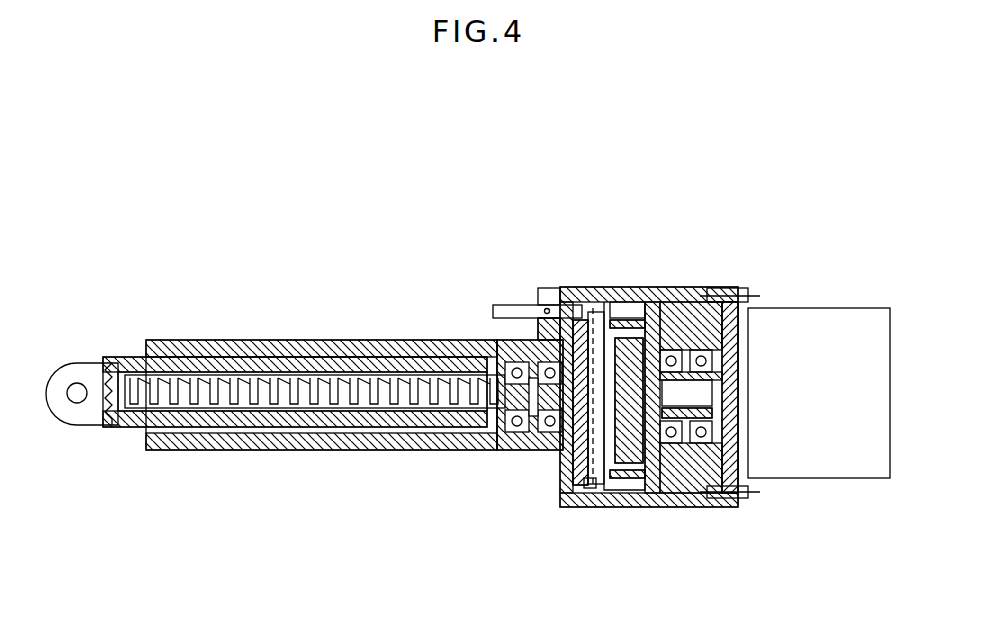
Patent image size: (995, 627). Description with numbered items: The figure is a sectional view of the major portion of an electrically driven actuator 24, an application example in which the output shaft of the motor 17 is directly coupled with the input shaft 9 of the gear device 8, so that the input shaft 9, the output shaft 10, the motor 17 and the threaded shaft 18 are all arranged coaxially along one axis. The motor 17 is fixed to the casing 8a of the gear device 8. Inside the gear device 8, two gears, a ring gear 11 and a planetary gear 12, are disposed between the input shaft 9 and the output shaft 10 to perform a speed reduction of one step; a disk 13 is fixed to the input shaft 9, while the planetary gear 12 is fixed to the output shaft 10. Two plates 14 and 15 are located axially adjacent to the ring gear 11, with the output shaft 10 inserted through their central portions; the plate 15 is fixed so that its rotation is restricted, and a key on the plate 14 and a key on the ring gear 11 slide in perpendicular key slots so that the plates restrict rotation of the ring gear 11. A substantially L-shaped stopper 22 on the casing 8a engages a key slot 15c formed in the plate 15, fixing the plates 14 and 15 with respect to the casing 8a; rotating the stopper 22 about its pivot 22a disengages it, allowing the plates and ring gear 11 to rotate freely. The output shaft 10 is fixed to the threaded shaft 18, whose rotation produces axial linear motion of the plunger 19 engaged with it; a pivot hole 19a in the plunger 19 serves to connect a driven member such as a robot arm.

The electrically driven actuator 24 is at (453, 166).
The plunger 19 is at (90, 412).
The pivot hole 19a is at (77, 398).
The output shaft 10 is at (555, 393).
The threaded shaft 18 is at (360, 400).
The stopper 22 is at (513, 305).
The pivot 22a is at (548, 306).
The input shaft 9 is at (705, 412).
The gear device 8 is at (690, 490).
The casing 8a is at (683, 300).
The plate 15 is at (583, 462).
The key slot 15c is at (594, 305).
The plate 14 is at (590, 482).
The ring gear 11 is at (623, 482).
The disk 13 is at (645, 480).
The planetary gear 12 is at (708, 493).
The motor 17 is at (862, 322).